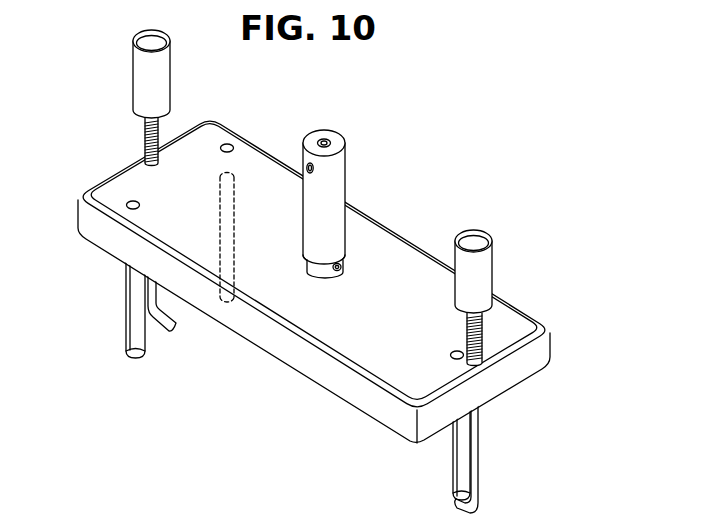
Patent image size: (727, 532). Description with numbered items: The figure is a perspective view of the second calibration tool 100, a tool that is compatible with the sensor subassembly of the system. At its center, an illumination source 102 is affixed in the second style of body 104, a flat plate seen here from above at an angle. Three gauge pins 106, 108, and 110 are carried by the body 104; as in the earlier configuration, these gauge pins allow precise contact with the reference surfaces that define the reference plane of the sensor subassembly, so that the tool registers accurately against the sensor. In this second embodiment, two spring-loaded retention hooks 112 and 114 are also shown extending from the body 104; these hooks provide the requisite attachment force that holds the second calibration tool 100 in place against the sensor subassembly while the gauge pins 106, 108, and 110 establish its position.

The second calibration tool 100 is at (311, 273).
The illumination source 102 is at (337, 122).
The body 104 is at (413, 318).
The gauge pin 106 is at (127, 294).
The gauge pin 108 is at (453, 470).
The gauge pin 110 is at (237, 178).
The spring-loaded retention hook 112 is at (168, 308).
The spring-loaded retention hook 114 is at (481, 440).